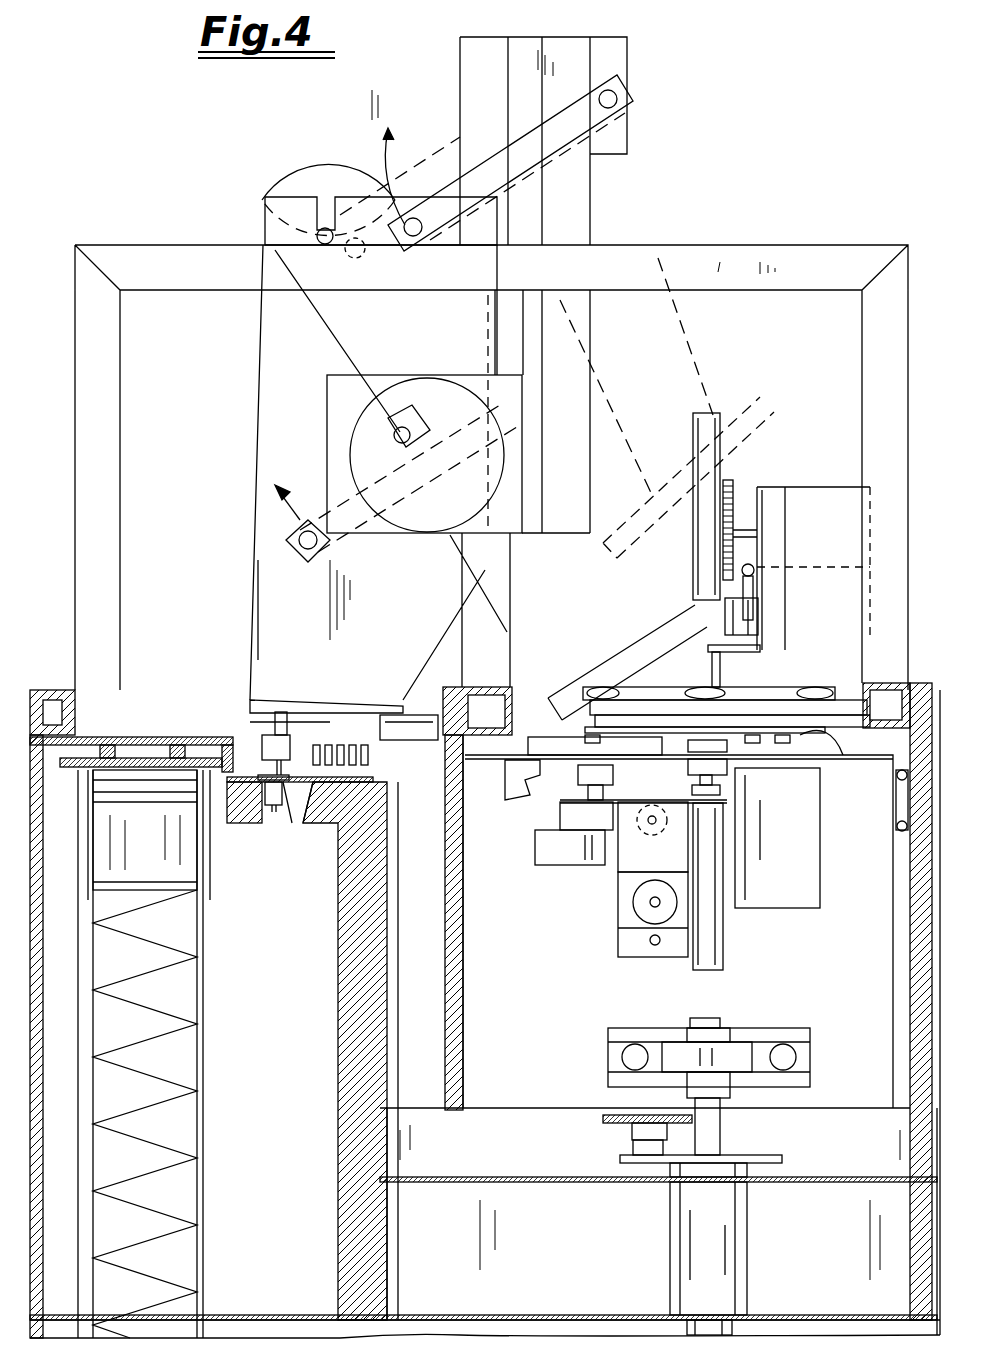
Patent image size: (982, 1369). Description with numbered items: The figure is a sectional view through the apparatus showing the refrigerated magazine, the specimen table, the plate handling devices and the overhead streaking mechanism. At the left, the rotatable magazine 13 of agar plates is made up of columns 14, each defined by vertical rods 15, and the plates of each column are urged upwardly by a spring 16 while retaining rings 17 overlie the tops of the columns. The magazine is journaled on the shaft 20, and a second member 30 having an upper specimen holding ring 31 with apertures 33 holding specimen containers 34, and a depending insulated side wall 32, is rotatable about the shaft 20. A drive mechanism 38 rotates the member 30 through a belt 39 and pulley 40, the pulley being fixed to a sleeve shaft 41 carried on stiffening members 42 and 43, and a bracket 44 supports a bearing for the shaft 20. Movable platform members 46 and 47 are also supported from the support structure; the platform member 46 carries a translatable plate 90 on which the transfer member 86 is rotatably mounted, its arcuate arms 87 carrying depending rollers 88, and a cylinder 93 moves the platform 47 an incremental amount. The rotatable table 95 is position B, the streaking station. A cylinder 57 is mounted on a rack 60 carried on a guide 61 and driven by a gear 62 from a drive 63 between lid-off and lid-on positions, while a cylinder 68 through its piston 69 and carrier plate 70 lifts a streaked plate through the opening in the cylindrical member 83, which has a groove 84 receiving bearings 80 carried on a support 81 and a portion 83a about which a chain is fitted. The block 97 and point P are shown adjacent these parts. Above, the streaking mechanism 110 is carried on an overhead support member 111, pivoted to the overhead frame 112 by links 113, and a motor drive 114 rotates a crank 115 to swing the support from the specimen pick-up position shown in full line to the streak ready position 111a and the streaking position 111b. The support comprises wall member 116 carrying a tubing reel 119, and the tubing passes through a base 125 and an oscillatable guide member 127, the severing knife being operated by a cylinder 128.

The rotatable magazine 13 is at (62, 1320).
The columns 14 is at (212, 1182).
The vertical rods 15 is at (80, 1092).
The spring 16 is at (180, 1028).
The retaining rings 17 is at (110, 745).
The shaft 20 is at (705, 1333).
The second member 30 is at (343, 1113).
The specimen holding ring 31 is at (330, 825).
The insulated side wall 32 is at (340, 1025).
The apertures 33 is at (295, 823).
The specimen containers 34 is at (270, 810).
The drive mechanism 38 is at (780, 1095).
The belt 39 is at (603, 1119).
The pulley 40 is at (738, 1155).
The sleeve shaft 41 is at (690, 1218).
The stiffening member 42 is at (600, 1182).
The stiffening member 43 is at (582, 1313).
The bracket 44 is at (740, 1050).
The movable platform member 46 is at (622, 878).
The movable platform member 47 is at (653, 837).
The cylinder 57 is at (696, 437).
The rack 60 is at (745, 605).
The guide 61 is at (755, 580).
The gear 62 is at (735, 490).
The drive 63 is at (820, 487).
The cylinder 68 is at (705, 935).
The piston 69 is at (718, 792).
The carrier plate 70 is at (735, 770).
The bearings 80 is at (702, 690).
The support 81 is at (850, 710).
The cylindrical member 83 is at (800, 705).
The portion of cylindrical member 83a is at (730, 700).
The groove 84 is at (740, 660).
The transfer member 86 is at (680, 742).
The arcuate arms 87 is at (810, 757).
The rollers 88 is at (800, 790).
The translatable plate 90 is at (610, 803).
The cylinder 93 is at (610, 930).
The rotatable table 95 is at (525, 797).
The block 97 is at (537, 845).
The streaking mechanism 110 is at (318, 140).
The overhead support member 111 is at (255, 357).
The streak ready position 111a is at (696, 357).
The streaking position 111b is at (643, 430).
The overhead frame 112 is at (697, 253).
The links 113 is at (497, 160).
The motor drive 114 is at (430, 395).
The crank 115 is at (315, 510).
The wall member 116 is at (265, 615).
The reel 119 is at (290, 182).
The base 125 is at (283, 703).
The oscillatable guide member 127 is at (262, 748).
The cylinder 128 is at (410, 712).
The position B is at (545, 712).
The point P is at (651, 726).